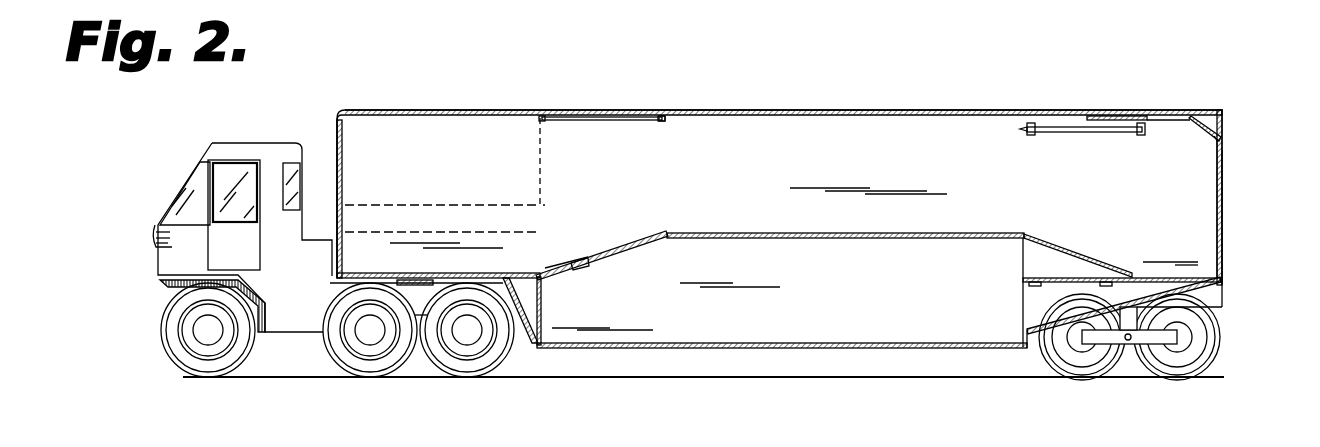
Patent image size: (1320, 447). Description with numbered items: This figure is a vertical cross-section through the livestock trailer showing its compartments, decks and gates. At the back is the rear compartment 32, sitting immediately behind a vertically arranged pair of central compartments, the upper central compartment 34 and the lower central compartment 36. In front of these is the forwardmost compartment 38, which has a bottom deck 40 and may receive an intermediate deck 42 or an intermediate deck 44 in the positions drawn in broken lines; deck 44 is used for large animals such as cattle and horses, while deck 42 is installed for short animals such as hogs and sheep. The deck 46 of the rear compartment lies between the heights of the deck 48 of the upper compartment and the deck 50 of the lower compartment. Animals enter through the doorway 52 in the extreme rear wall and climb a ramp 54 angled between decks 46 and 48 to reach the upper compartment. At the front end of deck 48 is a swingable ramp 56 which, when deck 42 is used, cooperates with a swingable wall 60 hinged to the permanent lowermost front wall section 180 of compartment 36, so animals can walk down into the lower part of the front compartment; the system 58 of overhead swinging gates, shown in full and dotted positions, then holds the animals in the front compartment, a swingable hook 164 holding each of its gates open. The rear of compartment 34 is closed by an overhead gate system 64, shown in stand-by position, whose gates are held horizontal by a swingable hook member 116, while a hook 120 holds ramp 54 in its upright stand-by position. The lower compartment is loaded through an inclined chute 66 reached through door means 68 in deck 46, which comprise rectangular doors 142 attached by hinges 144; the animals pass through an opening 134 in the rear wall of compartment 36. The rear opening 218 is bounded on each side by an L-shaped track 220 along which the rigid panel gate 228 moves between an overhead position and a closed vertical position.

The rear compartment 32 is at (1200, 253).
The upper central compartment 34 is at (760, 132).
The lower central compartment 36 is at (758, 326).
The forwardmost compartment 38 is at (375, 127).
The bottom deck 40 is at (487, 276).
The intermediate deck 42 is at (448, 205).
The intermediate deck 44 is at (383, 232).
The deck of rear compartment 46 is at (1142, 275).
The deck of upper central compartment 48 is at (798, 233).
The deck of lower central compartment 50 is at (850, 332).
The doorway 52 is at (1198, 131).
The ramp 54 is at (1077, 253).
The swingable ramp 56 is at (602, 250).
The system of overhead swinging gates 58 is at (635, 122).
The swingable wall 60 is at (555, 273).
The overhead gate system 64 is at (1095, 136).
The inclined chute 66 is at (1035, 328).
The door means 68 is at (1060, 275).
The swingable hook member 116 is at (1144, 136).
The hook 120 is at (1034, 136).
The opening 134 is at (1040, 298).
The rectangular doors 142 is at (1107, 284).
The hinges 144 is at (1026, 282).
The swingable hook 164 is at (660, 121).
The lowermost front wall section 180 is at (543, 315).
The rear opening 218 is at (1209, 200).
The track 220 is at (1217, 220).
The gate 228 is at (1213, 141).